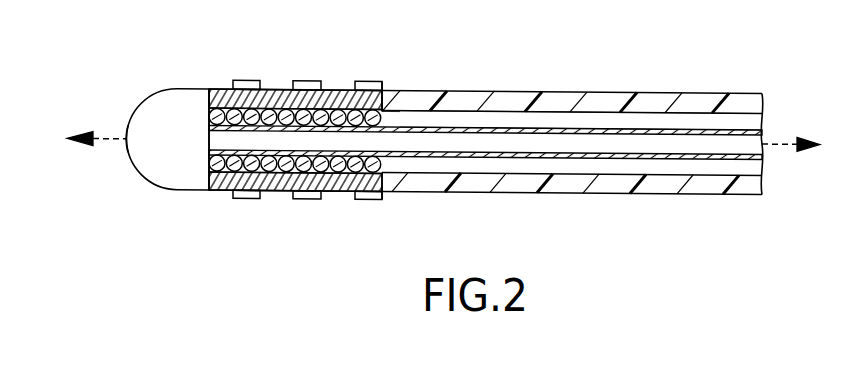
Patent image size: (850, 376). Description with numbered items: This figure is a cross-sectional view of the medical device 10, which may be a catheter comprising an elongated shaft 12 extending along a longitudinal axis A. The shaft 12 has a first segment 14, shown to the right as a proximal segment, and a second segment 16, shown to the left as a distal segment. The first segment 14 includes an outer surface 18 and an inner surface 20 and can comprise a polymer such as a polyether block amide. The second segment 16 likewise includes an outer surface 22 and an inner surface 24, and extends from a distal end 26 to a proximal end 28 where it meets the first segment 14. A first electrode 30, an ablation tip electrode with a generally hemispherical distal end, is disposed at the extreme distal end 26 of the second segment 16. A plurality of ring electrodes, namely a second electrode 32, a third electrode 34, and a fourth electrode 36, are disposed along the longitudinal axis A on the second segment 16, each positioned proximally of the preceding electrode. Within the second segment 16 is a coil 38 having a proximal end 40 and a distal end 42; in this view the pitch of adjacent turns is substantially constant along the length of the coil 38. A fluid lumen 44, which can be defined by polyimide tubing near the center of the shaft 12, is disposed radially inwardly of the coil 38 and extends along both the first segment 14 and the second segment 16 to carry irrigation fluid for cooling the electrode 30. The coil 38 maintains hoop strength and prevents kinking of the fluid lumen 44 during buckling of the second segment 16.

The medical device 10 is at (544, 52).
The elongated shaft 12 is at (497, 88).
The first segment 14 is at (760, 207).
The second segment 16 is at (382, 207).
The outer surface 18 is at (660, 88).
The inner surface 20 is at (697, 105).
The outer surface 22 is at (275, 89).
The inner surface 24 is at (225, 112).
The distal end 26 is at (127, 150).
The proximal end 28 is at (384, 96).
The first electrode 30 is at (155, 98).
The second electrode 32 is at (258, 89).
The third electrode 34 is at (322, 81).
The fourth electrode 36 is at (383, 80).
The coil 38 is at (294, 110).
The proximal end 40 is at (386, 110).
The distal end 42 is at (222, 108).
The fluid lumen 44 is at (584, 123).
The longitudinal axis A is at (778, 137).